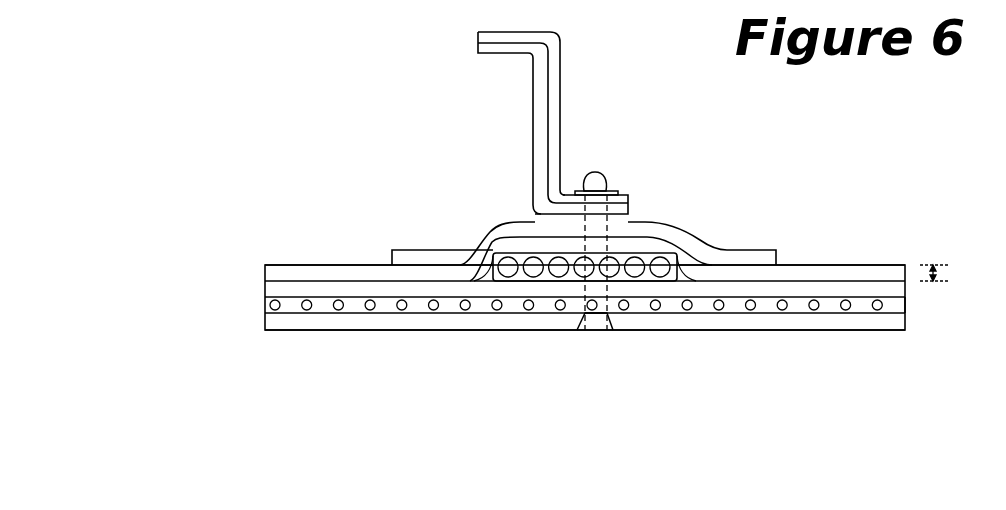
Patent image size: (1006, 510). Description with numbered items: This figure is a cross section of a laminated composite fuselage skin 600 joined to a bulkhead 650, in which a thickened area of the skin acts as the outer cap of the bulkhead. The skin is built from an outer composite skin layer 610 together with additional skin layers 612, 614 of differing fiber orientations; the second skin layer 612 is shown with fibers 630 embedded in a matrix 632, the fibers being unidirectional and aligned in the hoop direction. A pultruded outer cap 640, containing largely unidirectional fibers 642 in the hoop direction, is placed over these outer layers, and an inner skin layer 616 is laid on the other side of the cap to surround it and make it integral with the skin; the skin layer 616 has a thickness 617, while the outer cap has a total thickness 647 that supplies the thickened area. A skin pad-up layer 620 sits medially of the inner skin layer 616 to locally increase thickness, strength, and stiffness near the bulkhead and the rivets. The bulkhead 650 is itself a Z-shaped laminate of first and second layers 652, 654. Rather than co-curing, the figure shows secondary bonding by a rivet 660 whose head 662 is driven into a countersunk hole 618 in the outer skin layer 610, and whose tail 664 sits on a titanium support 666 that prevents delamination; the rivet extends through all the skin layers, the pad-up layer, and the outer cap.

The laminated composite fuselage skin 600 is at (767, 242).
The outer composite skin layer 610 is at (265, 318).
The second skin layer 612 is at (265, 300).
The skin layer 614 is at (265, 287).
The inner skin layer 616 is at (265, 275).
The thickness 617 is at (927, 273).
The countersunk hole 618 is at (580, 322).
The skin pad-up layer 620 is at (392, 258).
The fibers 630 is at (903, 310).
The matrix 632 is at (887, 305).
The pultruded outer cap 640 is at (490, 250).
The unidirectional fibers 642 is at (492, 267).
The total thickness 647 is at (678, 257).
The bulkhead 650 is at (533, 88).
The first layer 652 is at (478, 47).
The second layer 654 is at (478, 36).
The rivet 660 is at (633, 214).
The head 662 is at (600, 330).
The tail 664 is at (605, 178).
The titanium support 666 is at (618, 192).